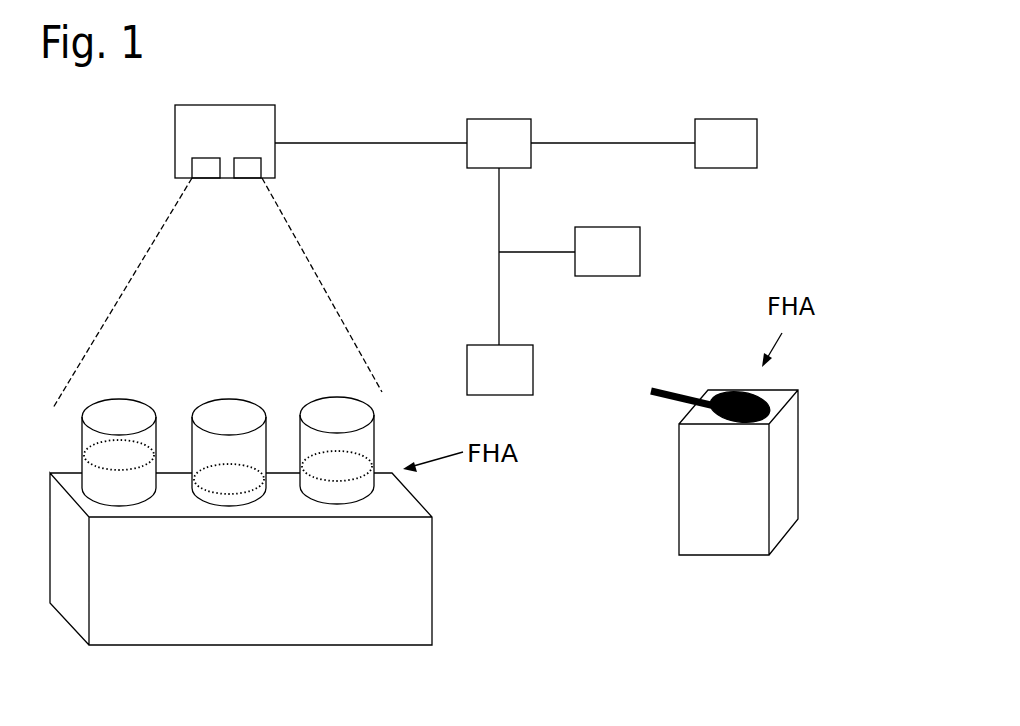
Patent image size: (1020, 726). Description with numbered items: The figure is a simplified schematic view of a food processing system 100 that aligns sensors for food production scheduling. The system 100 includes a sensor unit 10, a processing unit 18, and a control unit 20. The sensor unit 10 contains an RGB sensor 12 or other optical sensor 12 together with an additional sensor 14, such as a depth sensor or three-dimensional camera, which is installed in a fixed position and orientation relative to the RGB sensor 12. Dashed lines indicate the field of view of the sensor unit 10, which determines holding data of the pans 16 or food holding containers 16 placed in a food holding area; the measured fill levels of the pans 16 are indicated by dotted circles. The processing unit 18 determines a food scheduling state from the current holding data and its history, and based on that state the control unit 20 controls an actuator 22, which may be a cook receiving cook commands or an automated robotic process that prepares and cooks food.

The system 100 is at (538, 84).
The sensor unit 10 is at (175, 145).
The RGB sensor 12 is at (205, 180).
The additional sensor 14 is at (263, 167).
The processing unit 18 is at (478, 168).
The control unit 20 is at (640, 250).
The actuator 22 is at (533, 368).
The pan 16 is at (300, 412).